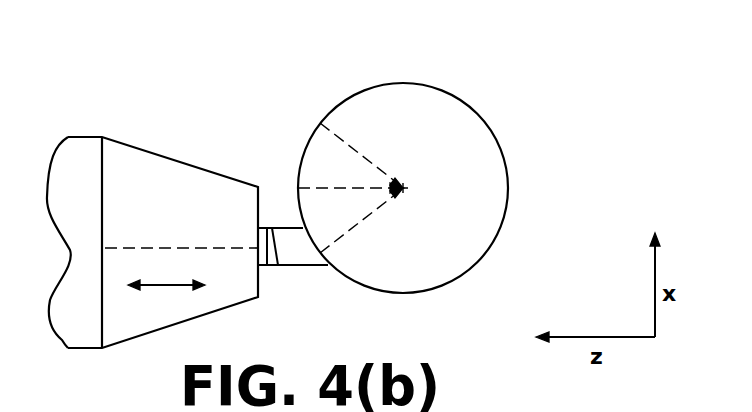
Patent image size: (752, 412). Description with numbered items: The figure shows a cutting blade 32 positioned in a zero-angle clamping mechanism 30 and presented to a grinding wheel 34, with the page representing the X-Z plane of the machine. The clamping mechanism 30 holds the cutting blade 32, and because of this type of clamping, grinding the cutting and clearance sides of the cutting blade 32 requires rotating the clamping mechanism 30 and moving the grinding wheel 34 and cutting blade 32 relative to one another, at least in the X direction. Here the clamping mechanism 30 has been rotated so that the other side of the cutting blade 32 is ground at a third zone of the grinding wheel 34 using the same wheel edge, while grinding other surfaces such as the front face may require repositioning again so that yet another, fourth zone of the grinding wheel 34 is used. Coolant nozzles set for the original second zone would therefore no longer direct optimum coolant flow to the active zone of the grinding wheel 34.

The clamping mechanism 30 is at (196, 178).
The cutting blade 32 is at (293, 255).
The grinding wheel 34 is at (449, 110).